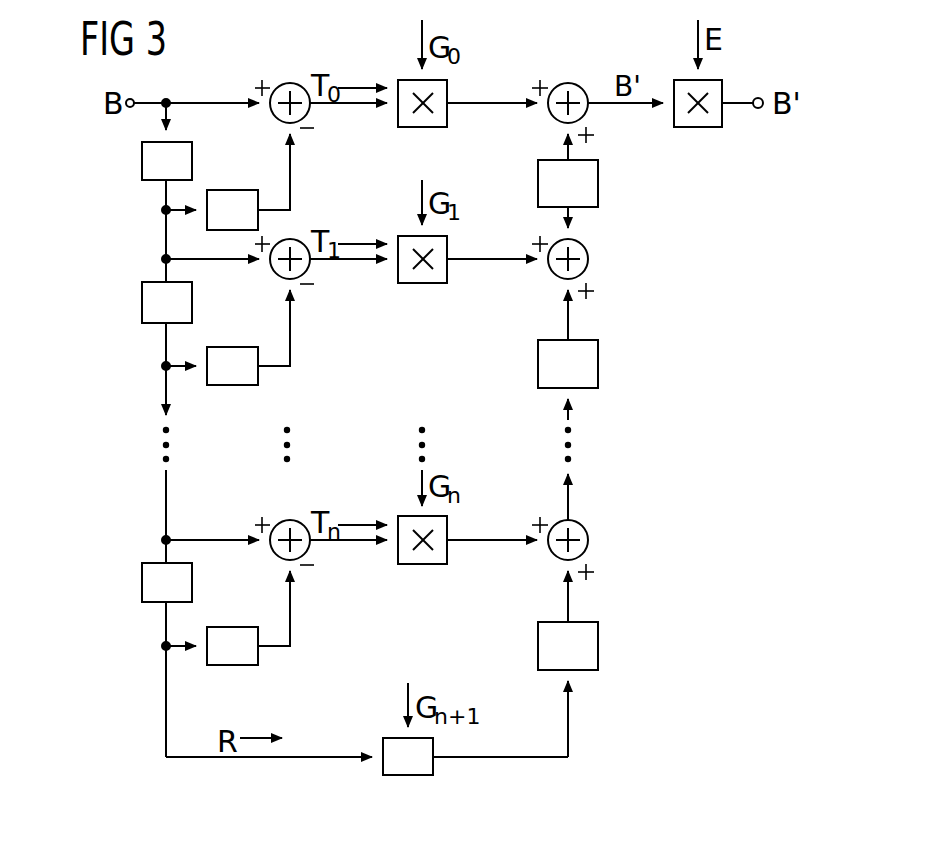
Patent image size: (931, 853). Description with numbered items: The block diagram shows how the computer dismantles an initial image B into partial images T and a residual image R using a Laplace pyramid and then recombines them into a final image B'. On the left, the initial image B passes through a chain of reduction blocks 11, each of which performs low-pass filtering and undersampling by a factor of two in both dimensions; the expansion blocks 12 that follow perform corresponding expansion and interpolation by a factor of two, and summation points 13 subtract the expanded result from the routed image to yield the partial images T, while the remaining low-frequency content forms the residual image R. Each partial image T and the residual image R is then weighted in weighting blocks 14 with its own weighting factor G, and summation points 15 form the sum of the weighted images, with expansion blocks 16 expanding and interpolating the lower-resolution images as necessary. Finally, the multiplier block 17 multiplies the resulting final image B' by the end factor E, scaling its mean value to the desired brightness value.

The reduction block 11 is at (142, 160).
The expansion block 12 is at (228, 190).
The summation point 13 is at (290, 83).
The weighting block 14 is at (410, 127).
The summation point 15 is at (568, 83).
The expansion block 16 is at (538, 182).
The multiplier block 17 is at (697, 127).